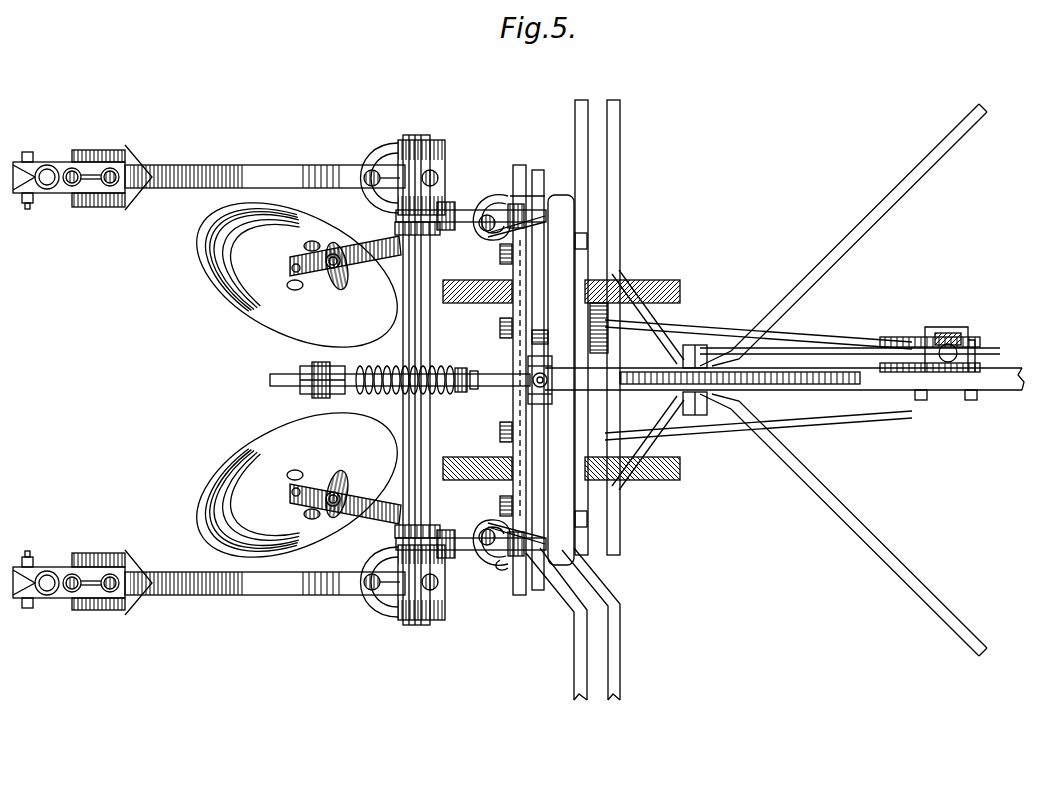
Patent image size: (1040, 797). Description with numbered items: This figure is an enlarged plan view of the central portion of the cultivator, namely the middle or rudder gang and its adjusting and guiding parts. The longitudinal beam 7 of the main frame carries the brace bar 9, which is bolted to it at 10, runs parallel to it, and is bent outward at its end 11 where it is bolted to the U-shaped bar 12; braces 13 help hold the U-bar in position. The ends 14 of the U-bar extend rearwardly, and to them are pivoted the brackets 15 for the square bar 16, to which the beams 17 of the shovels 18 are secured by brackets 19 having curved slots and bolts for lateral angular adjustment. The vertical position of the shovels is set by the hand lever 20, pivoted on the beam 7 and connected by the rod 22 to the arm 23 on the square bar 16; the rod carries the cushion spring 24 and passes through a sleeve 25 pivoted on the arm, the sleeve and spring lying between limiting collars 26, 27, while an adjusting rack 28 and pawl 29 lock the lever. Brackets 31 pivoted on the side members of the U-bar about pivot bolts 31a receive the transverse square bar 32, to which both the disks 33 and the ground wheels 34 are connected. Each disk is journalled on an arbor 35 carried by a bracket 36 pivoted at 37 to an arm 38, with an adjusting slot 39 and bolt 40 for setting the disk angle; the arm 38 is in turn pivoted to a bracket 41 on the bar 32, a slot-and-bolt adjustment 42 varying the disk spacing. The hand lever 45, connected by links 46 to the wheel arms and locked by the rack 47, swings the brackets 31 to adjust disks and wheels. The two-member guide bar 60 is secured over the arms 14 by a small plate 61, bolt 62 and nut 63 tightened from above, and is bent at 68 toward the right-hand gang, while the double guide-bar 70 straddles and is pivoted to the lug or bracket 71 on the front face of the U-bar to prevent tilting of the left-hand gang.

The longitudinal beam 7 is at (1005, 391).
The brace bar 9 is at (868, 226).
The bolted connection 10 is at (712, 348).
The bent ends 11 is at (683, 358).
The U-shaped bar 12 is at (576, 533).
The brace 13 is at (652, 324).
The ends of U-bar 14 is at (460, 210).
The bracket 15 is at (395, 228).
The square bar 16 is at (430, 332).
The beam 17 is at (244, 165).
The shovel 18 is at (124, 203).
The bracket 19 is at (372, 150).
The hand lever 20 is at (974, 352).
The rod 22 is at (270, 380).
The arm 23 is at (310, 368).
The cushion spring 24 is at (450, 366).
The sleeve 25 is at (460, 392).
The limiting collar 26 is at (312, 366).
The limiting collar 27 is at (474, 390).
The adjusting rack 28 is at (980, 366).
The pawl 29 is at (922, 398).
The bracket 31 is at (494, 195).
The pivot bolt 31a is at (520, 196).
The transverse square bar 32 is at (508, 572).
The disk 33 is at (232, 345).
The ground wheel 34 is at (676, 282).
The arbor 35 is at (302, 288).
The bracket 36 is at (336, 270).
The pivot 37 is at (290, 268).
The arm 38 is at (430, 245).
The adjusting slot 39 is at (348, 274).
The bolt 40 is at (322, 238).
The bracket 41 is at (505, 232).
The slot-and-bolt adjustment 42 is at (482, 232).
The hand lever 45 is at (952, 330).
The link 46 is at (822, 346).
The rack 47 is at (900, 337).
The guide bar 60 is at (602, 608).
The plate 61 is at (528, 392).
The bolt 62 is at (533, 376).
The nut 63 is at (532, 338).
The bend 68 is at (574, 596).
The double guide-bar 70 is at (607, 122).
The lug or bracket 71 is at (606, 305).